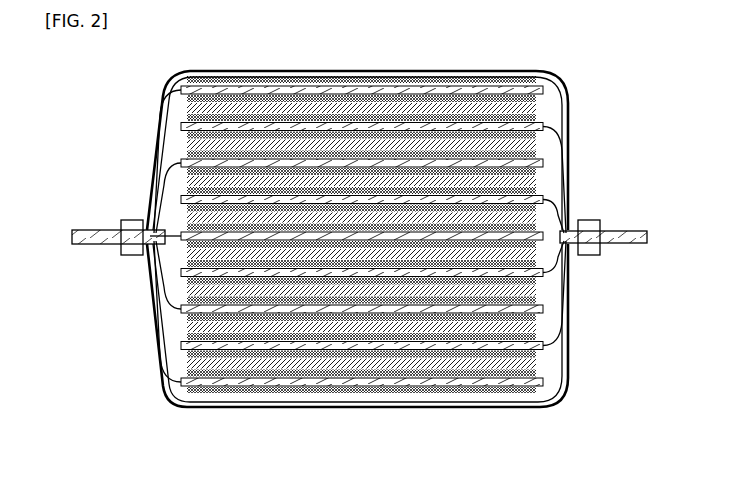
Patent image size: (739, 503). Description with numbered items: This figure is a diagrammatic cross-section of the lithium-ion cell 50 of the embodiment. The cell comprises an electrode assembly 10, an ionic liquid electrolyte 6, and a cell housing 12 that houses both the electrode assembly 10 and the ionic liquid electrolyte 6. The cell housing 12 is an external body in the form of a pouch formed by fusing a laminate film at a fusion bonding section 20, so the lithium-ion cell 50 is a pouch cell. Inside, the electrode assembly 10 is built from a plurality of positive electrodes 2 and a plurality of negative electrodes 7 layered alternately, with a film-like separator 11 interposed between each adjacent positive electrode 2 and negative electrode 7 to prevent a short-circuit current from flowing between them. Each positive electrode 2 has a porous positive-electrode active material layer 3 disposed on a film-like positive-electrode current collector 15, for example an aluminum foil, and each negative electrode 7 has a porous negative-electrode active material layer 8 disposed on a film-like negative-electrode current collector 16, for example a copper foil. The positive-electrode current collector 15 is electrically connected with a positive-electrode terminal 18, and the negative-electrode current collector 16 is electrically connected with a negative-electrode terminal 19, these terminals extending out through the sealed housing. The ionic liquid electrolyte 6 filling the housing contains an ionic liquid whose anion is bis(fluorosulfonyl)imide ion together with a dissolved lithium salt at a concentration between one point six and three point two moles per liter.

The positive electrode 2 is at (403, 45).
The positive-electrode active material layer 3 is at (422, 95).
The ionic liquid electrolyte 6 is at (182, 362).
The negative electrode 7 is at (597, 125).
The negative-electrode active material layer 8 is at (548, 141).
The electrode assembly 10 is at (340, 406).
The separator 11 is at (219, 90).
The cell housing 12 is at (339, 73).
The positive-electrode current collector 15 is at (447, 107).
The negative-electrode current collector 16 is at (548, 148).
The positive-electrode terminal 18 is at (88, 246).
The negative-electrode terminal 19 is at (638, 244).
The fusion bonding section 20 is at (135, 220).
The lithium-ion cell 50 is at (578, 66).